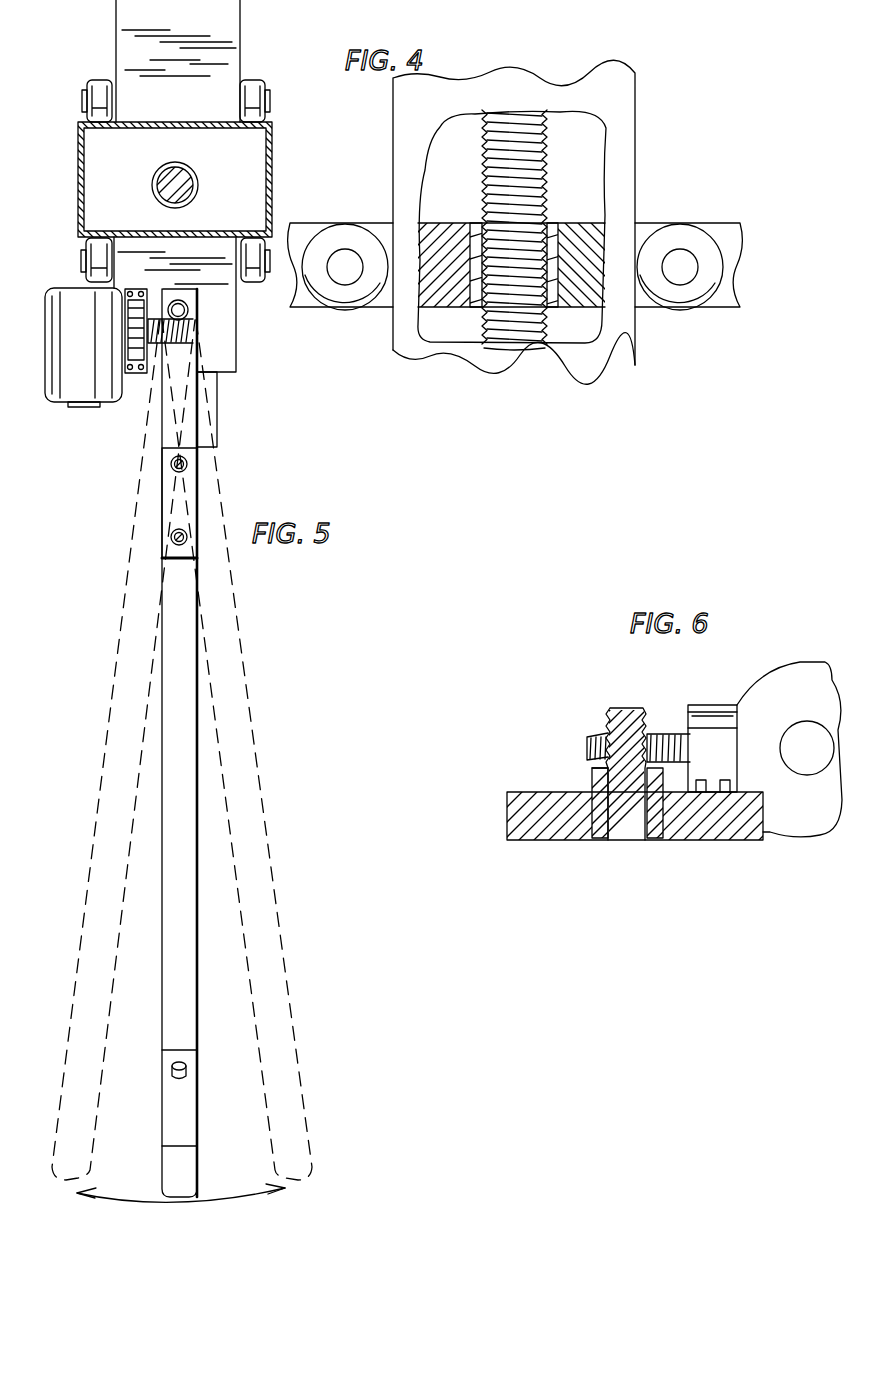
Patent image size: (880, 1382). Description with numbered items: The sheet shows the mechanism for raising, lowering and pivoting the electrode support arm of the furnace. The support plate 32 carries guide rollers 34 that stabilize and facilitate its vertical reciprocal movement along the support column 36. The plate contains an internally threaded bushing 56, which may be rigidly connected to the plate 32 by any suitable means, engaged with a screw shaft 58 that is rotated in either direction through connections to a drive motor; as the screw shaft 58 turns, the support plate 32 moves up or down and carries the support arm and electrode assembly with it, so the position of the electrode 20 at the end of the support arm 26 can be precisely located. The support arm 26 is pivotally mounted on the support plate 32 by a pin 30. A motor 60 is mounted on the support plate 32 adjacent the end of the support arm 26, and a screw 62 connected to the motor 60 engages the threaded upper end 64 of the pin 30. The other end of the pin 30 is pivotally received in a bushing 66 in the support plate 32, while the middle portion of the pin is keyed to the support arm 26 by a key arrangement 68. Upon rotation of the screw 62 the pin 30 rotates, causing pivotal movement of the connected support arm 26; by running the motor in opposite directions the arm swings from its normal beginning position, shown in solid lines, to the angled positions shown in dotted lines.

In FIG. 5, the electrode 20 is at (186, 1067).
In FIG. 5, the support arm 26 is at (115, 647).
In FIG. 6, the support arm 26 is at (591, 778).
In FIG. 5, the pin 30 is at (185, 307).
In FIG. 6, the pin 30 is at (622, 711).
In FIG. 5, the support plate 32 is at (152, 13).
In FIG. 4, the support plate 32 is at (441, 230).
In FIG. 6, the support plate 32 is at (546, 832).
In FIG. 5, the guide rollers 34 is at (251, 84).
In FIG. 4, the guide rollers 34 is at (347, 232).
In FIG. 5, the support column 36 is at (80, 165).
In FIG. 4, the support column 36 is at (617, 82).
In FIG. 5, the internally threaded bushing 56 is at (190, 172).
In FIG. 4, the internally threaded bushing 56 is at (552, 232).
In FIG. 5, the screw shaft 58 is at (165, 200).
In FIG. 4, the screw shaft 58 is at (522, 120).
In FIG. 5, the motor 60 is at (96, 397).
In FIG. 6, the motor 60 is at (791, 684).
In FIG. 5, the screw 62 is at (160, 362).
In FIG. 6, the screw 62 is at (670, 734).
In FIG. 6, the threaded upper end 64 is at (606, 727).
In FIG. 6, the bushing 66 is at (600, 836).
In FIG. 6, the key arrangement 68 is at (662, 802).